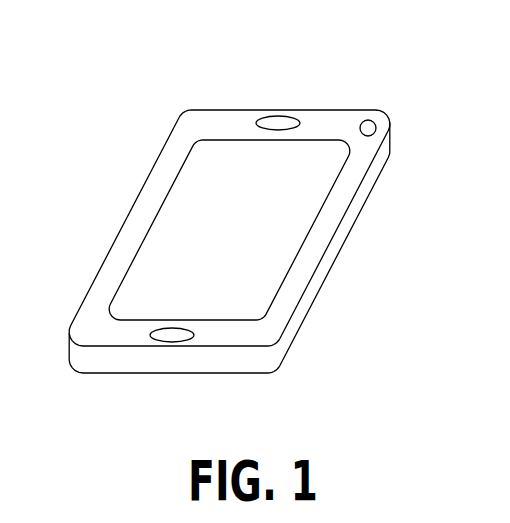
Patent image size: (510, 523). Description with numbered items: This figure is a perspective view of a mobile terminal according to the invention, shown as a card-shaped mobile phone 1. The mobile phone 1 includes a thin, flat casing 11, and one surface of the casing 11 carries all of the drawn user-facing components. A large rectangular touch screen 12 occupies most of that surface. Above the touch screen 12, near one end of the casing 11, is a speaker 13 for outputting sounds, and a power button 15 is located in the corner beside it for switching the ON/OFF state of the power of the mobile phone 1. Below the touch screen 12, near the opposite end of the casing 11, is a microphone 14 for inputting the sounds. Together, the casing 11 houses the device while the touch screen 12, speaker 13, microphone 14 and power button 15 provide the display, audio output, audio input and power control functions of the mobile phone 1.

The mobile phone 1 is at (165, 91).
The casing 11 is at (160, 153).
The touch screen 12 is at (148, 223).
The speaker 13 is at (278, 118).
The microphone 14 is at (157, 343).
The power button 15 is at (375, 135).